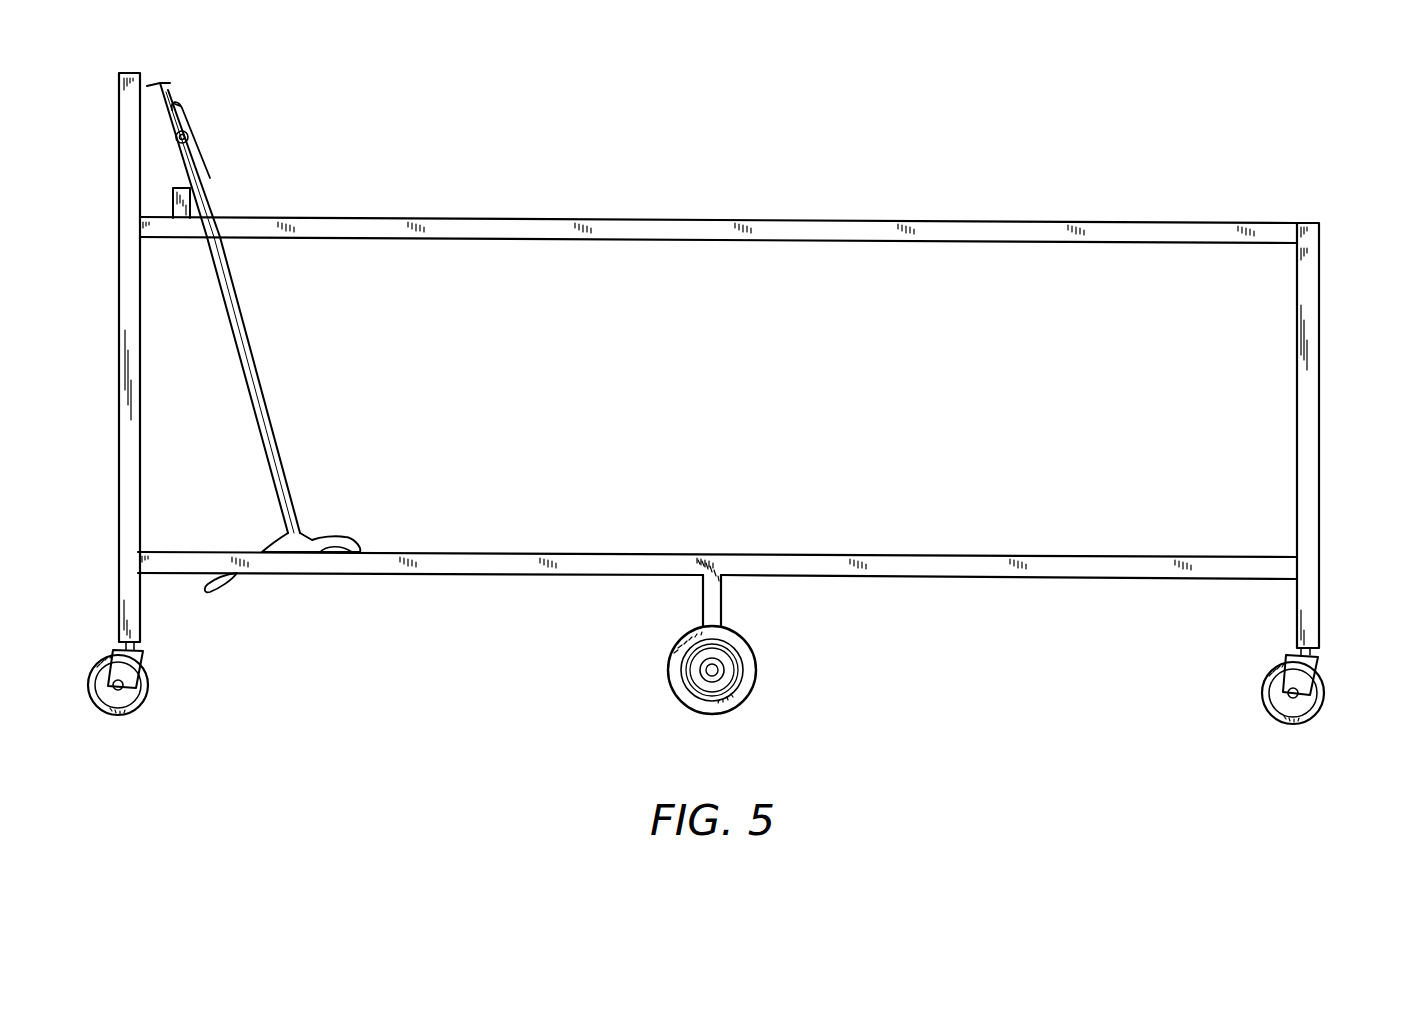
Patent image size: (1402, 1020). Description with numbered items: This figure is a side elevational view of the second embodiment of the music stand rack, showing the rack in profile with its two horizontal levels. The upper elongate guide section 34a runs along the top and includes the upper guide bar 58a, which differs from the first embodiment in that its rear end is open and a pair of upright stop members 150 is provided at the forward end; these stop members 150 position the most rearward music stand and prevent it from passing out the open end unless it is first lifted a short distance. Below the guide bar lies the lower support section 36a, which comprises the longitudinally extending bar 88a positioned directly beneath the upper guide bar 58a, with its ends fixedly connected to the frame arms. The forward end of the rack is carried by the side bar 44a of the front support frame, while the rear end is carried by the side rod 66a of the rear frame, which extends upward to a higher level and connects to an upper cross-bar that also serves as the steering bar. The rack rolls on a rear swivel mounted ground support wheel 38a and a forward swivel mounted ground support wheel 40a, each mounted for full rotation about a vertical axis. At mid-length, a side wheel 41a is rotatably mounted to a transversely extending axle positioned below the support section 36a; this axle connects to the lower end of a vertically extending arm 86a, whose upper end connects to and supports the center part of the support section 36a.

The upper elongate guide section 34a is at (822, 200).
The lower support section 36a is at (927, 550).
The rear center swivel mounted ground support wheel 38a is at (134, 708).
The forward center swivel mounted ground support wheel 40a is at (1307, 717).
The side wheel 41a is at (690, 698).
The side bar 44a is at (1308, 420).
The upper guide bar 58a is at (695, 226).
The side rod 66a is at (132, 457).
The vertically extending arm 86a is at (713, 607).
The longitudinally extending bar 88a is at (780, 562).
The upright stop member 150 is at (189, 198).